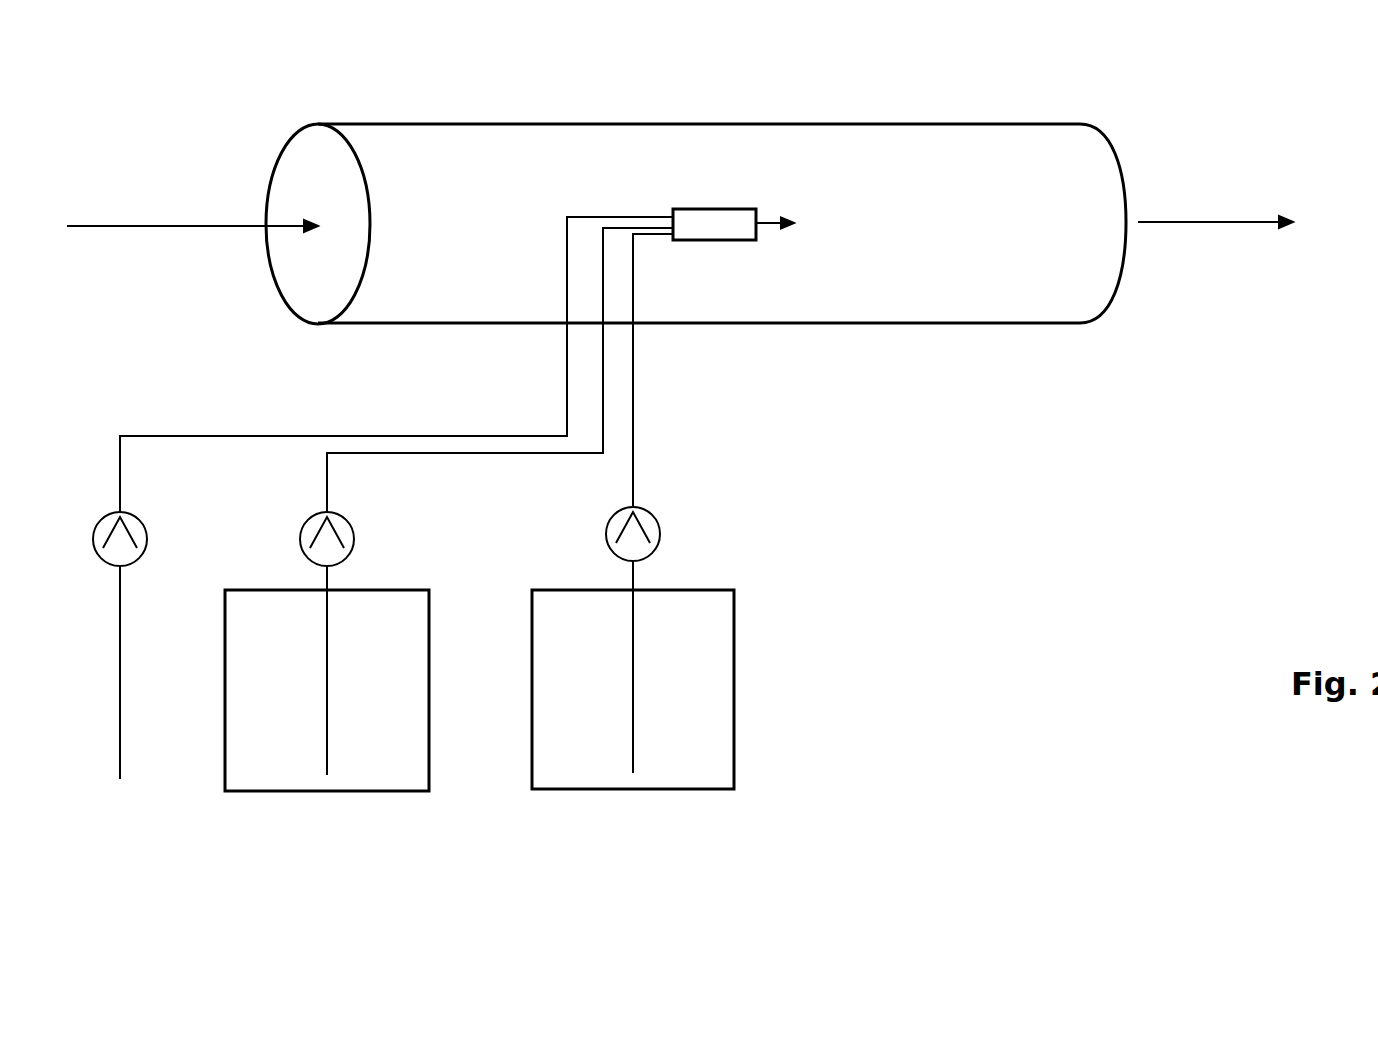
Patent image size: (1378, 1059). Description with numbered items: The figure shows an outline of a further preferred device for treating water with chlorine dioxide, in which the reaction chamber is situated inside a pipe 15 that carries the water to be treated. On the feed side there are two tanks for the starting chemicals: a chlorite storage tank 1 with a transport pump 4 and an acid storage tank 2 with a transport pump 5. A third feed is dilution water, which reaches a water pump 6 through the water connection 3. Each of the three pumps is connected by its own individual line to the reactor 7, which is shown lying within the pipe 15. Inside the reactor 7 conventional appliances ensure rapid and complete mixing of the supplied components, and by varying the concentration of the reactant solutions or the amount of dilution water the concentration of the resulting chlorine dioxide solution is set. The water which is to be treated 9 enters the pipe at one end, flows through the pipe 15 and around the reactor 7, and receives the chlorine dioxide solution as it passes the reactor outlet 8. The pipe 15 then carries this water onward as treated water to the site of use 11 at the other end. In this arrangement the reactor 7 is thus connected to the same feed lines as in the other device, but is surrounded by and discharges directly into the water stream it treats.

The chlorite storage tank 1 is at (312, 678).
The acid storage tank 2 is at (613, 675).
The water connection 3 is at (102, 675).
The transport pump 4 is at (486, 397).
The transport pump 5 is at (648, 397).
The water pump 6 is at (383, 391).
The reactor 7 is at (714, 205).
The reactor outlet 8 is at (775, 239).
The water which is to be treated 9 is at (192, 211).
The site of use (treated water) 11 is at (1215, 204).
The pipe 15 is at (696, 249).